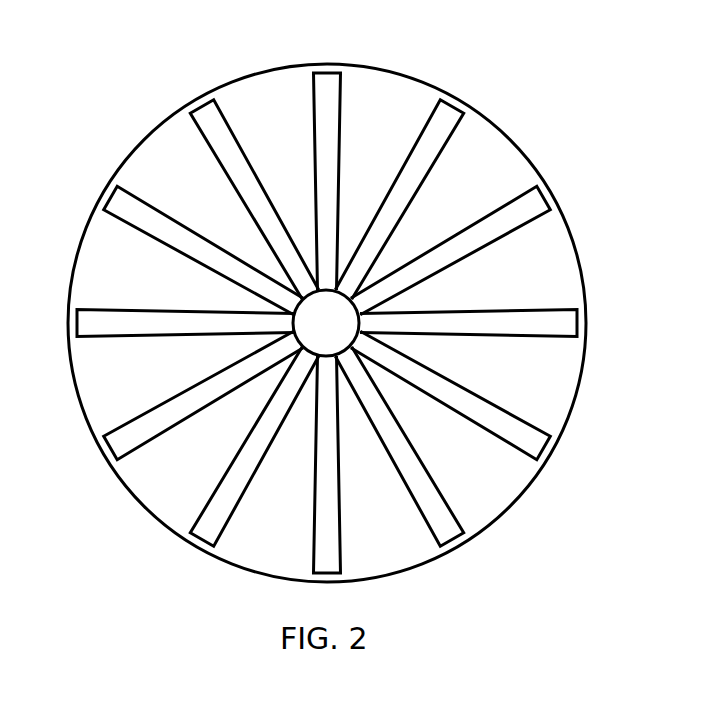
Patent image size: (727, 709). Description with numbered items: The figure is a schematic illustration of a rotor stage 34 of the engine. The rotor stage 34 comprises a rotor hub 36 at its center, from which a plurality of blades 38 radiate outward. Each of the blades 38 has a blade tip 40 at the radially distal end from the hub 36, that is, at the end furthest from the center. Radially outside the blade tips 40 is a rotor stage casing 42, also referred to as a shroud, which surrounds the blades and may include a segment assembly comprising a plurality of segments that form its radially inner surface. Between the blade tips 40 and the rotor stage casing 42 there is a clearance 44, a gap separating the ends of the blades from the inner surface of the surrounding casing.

The rotor stage 34 is at (323, 306).
The rotor hub 36 is at (325, 328).
The blades 38 is at (360, 301).
The blade tip 40 is at (545, 447).
The rotor stage casing 42 is at (510, 130).
The clearance 44 is at (308, 74).